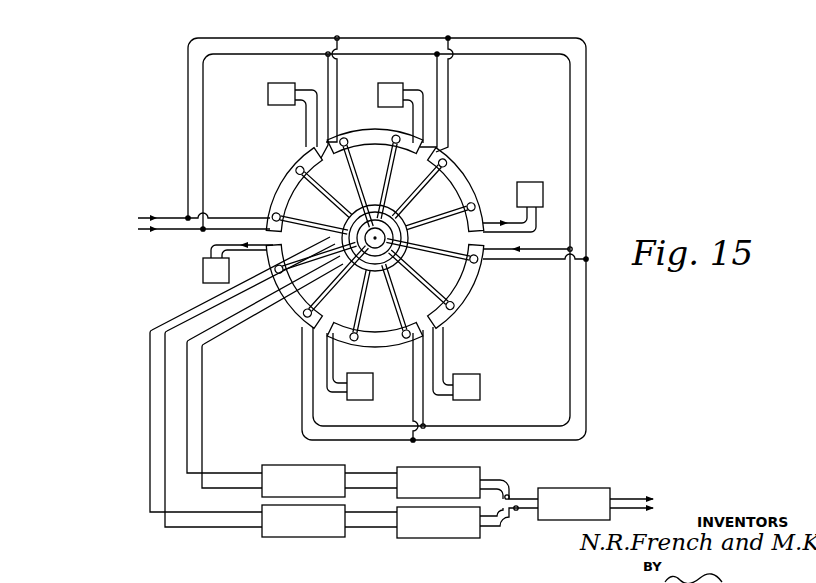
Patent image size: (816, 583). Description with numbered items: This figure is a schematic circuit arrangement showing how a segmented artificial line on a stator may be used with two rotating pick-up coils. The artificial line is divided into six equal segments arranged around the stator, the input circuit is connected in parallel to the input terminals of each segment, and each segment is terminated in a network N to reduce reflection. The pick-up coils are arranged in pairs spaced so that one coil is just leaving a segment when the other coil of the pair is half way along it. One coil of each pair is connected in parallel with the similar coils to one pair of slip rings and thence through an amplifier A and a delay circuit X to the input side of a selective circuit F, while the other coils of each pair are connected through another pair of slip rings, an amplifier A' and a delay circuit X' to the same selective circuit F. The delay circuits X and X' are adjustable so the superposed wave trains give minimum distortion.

The network N is at (373, 241).
The amplifier A is at (303, 469).
The amplifier A' is at (303, 531).
The delay circuit X is at (450, 474).
The delay circuit X' is at (438, 532).
The selective circuit F is at (556, 492).